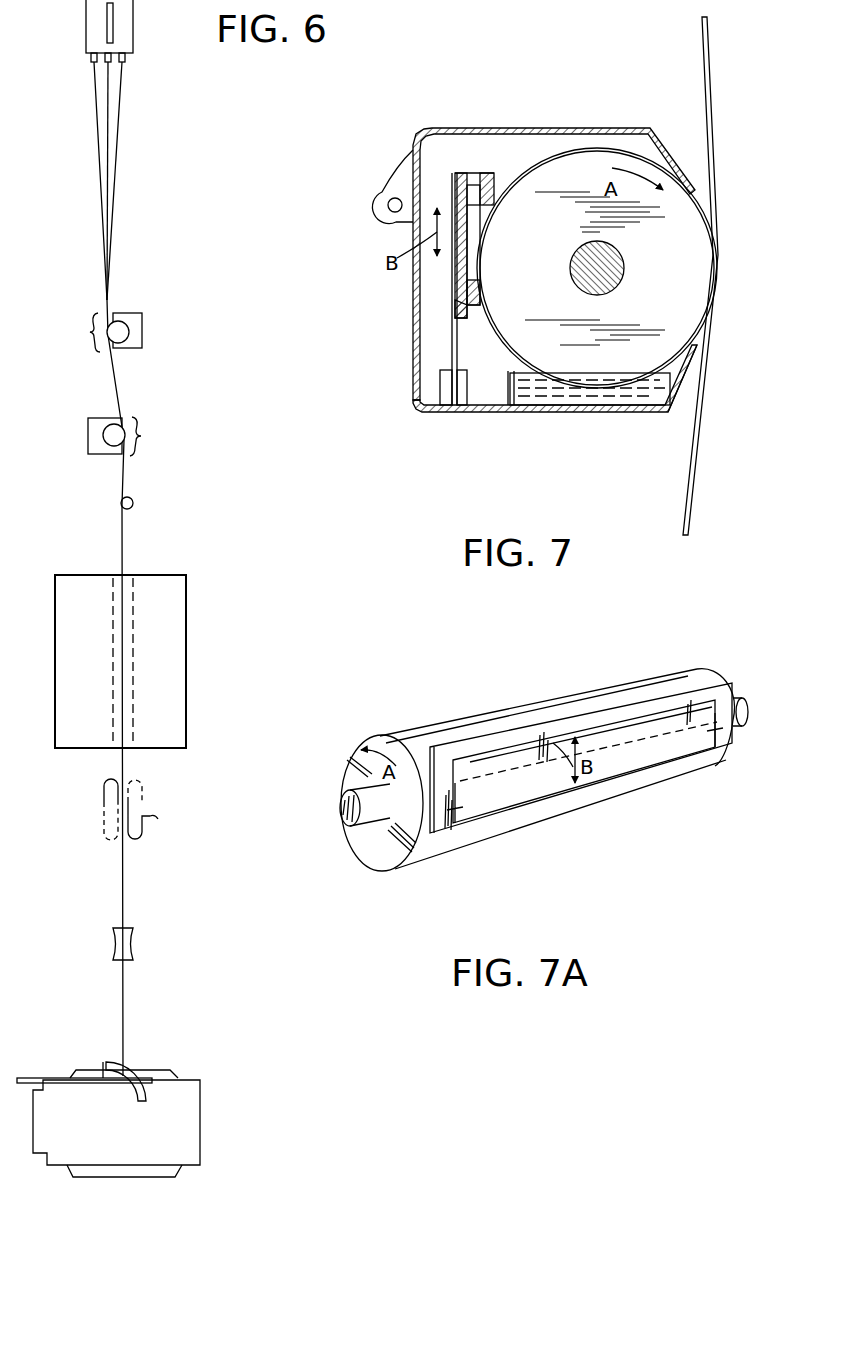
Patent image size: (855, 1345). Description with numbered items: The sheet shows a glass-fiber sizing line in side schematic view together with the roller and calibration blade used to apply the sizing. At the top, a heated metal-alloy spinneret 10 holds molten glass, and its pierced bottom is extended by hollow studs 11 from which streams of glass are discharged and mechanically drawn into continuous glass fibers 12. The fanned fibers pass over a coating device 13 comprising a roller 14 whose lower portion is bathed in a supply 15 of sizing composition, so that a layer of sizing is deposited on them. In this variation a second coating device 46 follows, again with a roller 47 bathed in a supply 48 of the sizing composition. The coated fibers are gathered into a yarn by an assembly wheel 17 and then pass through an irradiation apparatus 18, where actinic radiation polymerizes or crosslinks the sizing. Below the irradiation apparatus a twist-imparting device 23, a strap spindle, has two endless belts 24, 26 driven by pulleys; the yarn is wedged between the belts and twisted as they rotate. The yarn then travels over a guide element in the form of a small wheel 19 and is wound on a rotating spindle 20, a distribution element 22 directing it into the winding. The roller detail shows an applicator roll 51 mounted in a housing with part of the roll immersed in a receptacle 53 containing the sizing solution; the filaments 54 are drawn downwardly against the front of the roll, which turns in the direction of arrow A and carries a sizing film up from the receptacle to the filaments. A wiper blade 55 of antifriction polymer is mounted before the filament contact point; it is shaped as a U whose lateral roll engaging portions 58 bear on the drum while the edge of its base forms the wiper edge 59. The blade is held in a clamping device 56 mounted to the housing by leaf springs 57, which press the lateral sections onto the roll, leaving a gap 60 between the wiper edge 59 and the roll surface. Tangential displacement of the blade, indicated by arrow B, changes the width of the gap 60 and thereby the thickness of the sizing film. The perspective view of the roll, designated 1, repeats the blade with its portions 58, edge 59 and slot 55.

In FIG. 7A, the cylinder / rotating drum 1 is at (355, 752).
In FIG. 6, the spinneret 10 is at (134, 22).
In FIG. 6, the hollow studs 11 is at (90, 64).
In FIG. 6, the continuous glass fibers 12 is at (121, 108).
In FIG. 6, the coating device 13 is at (82, 332).
In FIG. 6, the roller 14 is at (131, 320).
In FIG. 6, the supply of the sizing composition 15 is at (138, 350).
In FIG. 7, the supply of the sizing composition 15 is at (413, 337).
In FIG. 6, the assembly wheel 17 is at (133, 503).
In FIG. 6, the irradiation apparatus 18 is at (187, 688).
In FIG. 6, the small wheel 19 is at (112, 940).
In FIG. 6, the rotating spindle 20 is at (190, 1100).
In FIG. 6, the distribution element 22 is at (125, 1078).
In FIG. 6, the twist-imparting device 23 is at (103, 840).
In FIG. 6, the endless belt 24 is at (103, 792).
In FIG. 6, the endless belt 26 is at (159, 810).
In FIG. 6, the second coating device 46 is at (150, 436).
In FIG. 6, the roller 47 is at (102, 420).
In FIG. 6, the supply of the sizing composition 48 is at (93, 453).
In FIG. 7, the applicator roll 51 is at (556, 172).
In FIG. 7, the receptacle 53 is at (668, 414).
In FIG. 7, the filaments 54 is at (708, 112).
In FIG. 7, the wiper blade 55 is at (467, 319).
In FIG. 7A, the wiper blade 55 is at (633, 742).
In FIG. 7, the clamping device 56 is at (479, 170).
In FIG. 7, the leaf springs 57 is at (452, 362).
In FIG. 7, the roll engaging portions 58 is at (480, 289).
In FIG. 7A, the roll engaging portions 58 is at (725, 727).
In FIG. 7, the wiper edge 59 is at (481, 262).
In FIG. 7A, the wiper edge 59 is at (505, 770).
In FIG. 7, the gap 60 is at (483, 237).